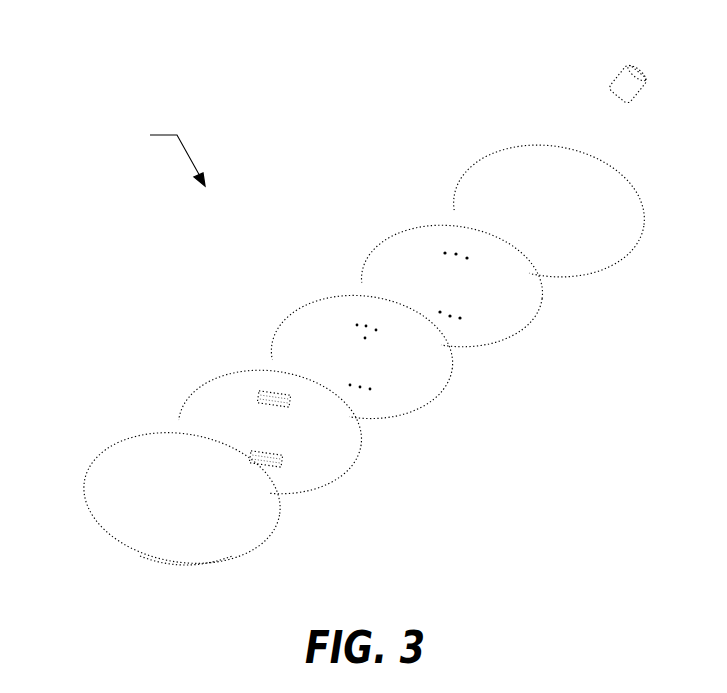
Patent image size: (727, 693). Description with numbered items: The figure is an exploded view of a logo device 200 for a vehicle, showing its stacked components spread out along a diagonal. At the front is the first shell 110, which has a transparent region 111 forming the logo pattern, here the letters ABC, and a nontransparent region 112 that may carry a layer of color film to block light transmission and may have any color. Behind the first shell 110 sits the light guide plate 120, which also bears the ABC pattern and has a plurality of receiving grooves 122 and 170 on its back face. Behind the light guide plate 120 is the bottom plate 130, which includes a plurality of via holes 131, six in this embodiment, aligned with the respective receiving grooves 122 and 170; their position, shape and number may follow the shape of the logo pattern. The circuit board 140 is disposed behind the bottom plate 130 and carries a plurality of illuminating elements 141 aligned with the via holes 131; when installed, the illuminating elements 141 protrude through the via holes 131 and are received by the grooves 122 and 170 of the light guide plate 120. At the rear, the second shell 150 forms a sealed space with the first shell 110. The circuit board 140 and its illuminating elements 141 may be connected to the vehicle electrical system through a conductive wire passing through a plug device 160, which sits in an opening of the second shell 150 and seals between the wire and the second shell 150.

The first shell 110 is at (131, 455).
The transparent region 111 is at (159, 508).
The nontransparent region 112 is at (203, 542).
The light guide plate 120 is at (207, 395).
The receiving groove 122 is at (272, 392).
The bottom plate 130 is at (308, 320).
The via holes 131 is at (377, 333).
The circuit board 140 is at (392, 260).
The illuminating elements 141 is at (455, 318).
The second shell 150 is at (503, 158).
The plug device 160 is at (630, 62).
The receiving groove 170 is at (278, 466).
The logo device 200 is at (146, 158).